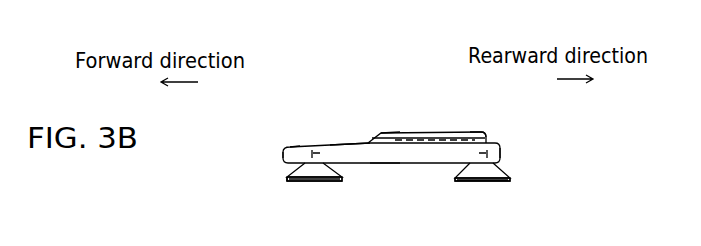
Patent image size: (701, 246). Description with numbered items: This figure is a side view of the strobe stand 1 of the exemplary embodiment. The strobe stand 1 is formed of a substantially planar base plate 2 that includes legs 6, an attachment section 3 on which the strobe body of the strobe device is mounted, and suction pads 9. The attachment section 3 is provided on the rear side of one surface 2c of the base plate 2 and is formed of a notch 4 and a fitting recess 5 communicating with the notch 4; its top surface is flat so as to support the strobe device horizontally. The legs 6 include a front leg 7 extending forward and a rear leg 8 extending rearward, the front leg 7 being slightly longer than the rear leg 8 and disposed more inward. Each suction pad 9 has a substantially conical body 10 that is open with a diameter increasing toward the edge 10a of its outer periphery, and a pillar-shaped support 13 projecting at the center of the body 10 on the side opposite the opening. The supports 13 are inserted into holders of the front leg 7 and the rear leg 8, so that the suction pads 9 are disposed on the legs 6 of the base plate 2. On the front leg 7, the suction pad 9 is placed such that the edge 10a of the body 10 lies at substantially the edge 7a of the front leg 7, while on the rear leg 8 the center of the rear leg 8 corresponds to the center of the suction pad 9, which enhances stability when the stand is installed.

The strobe stand 1 is at (250, 46).
The base plate 2 is at (402, 155).
The one surface of base plate 2c is at (355, 141).
The attachment section 3 is at (427, 133).
The notch 4 is at (486, 133).
The fitting recess 5 is at (392, 137).
The legs 6 is at (385, 157).
The front leg 7 is at (290, 149).
The edge of front leg 7a is at (283, 158).
The rear leg 8 is at (494, 147).
The suction pad 9 is at (315, 173).
The body 10 is at (300, 184).
The edge of outer periphery 10a is at (287, 182).
The support 13 is at (312, 155).